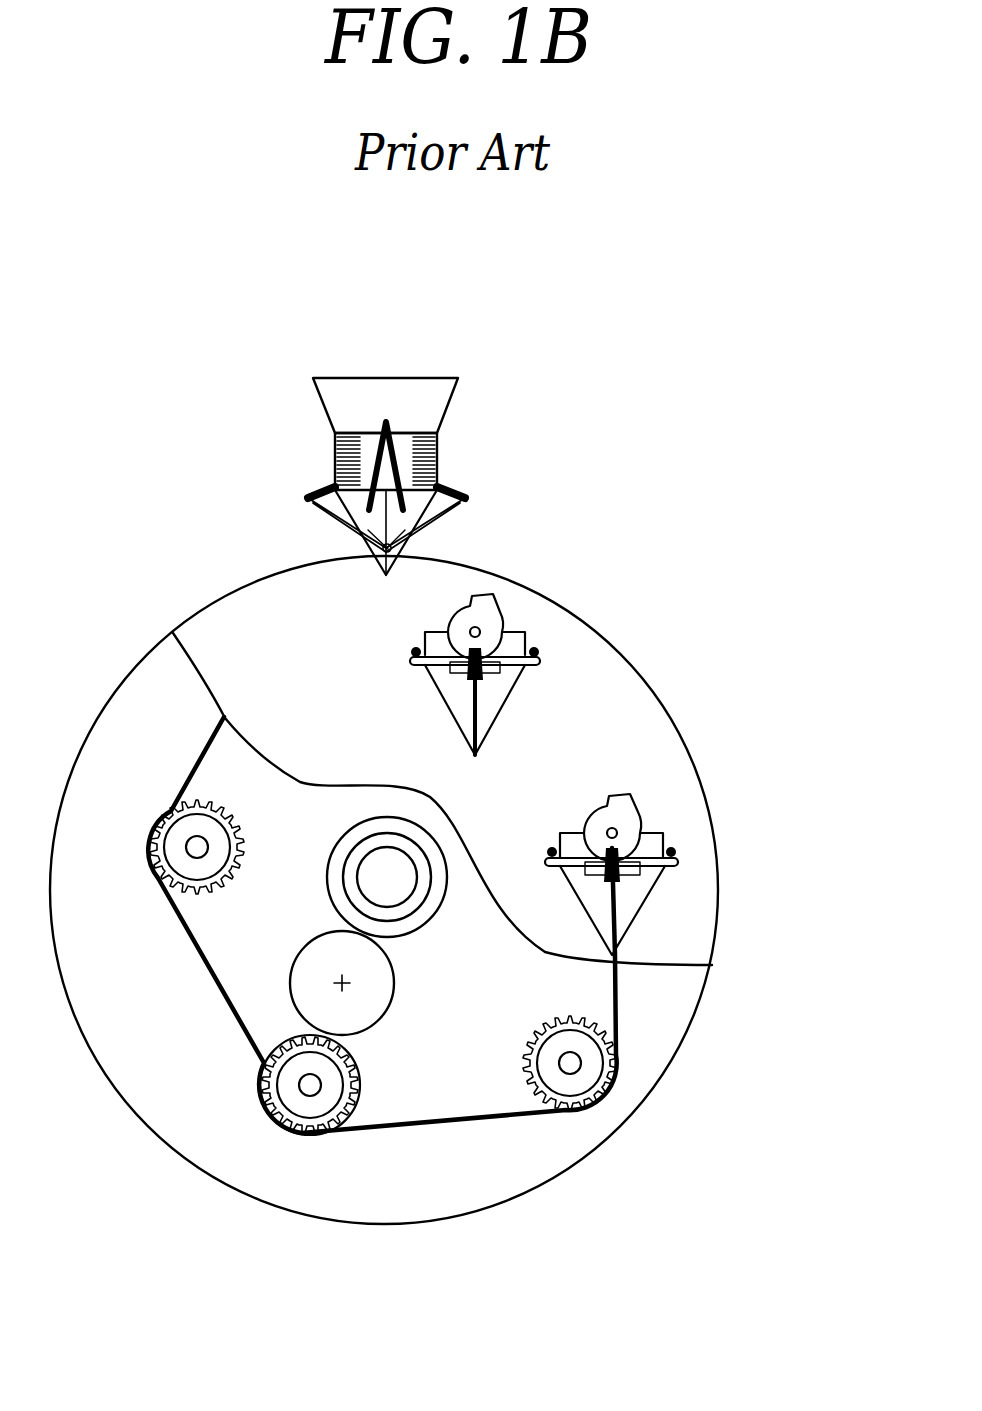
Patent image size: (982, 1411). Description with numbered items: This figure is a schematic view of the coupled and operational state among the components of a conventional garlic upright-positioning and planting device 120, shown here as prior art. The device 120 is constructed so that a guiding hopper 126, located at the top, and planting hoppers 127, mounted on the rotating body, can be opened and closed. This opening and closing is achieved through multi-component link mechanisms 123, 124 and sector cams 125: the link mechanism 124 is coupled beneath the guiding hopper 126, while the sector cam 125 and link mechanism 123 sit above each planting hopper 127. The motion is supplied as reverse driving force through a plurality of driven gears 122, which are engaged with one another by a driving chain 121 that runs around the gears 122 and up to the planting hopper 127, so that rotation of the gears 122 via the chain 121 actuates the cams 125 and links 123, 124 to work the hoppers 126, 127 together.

The conventional garlic planting device 120 is at (700, 695).
The driving chain 121 is at (520, 1113).
The driven gears 122 is at (282, 1125).
The multi-component link mechanism 123 is at (670, 863).
The multi-component link mechanism 124 is at (468, 497).
The sector cam 125 is at (627, 818).
The guiding hopper 126 is at (448, 446).
The planting hopper 127 is at (662, 910).